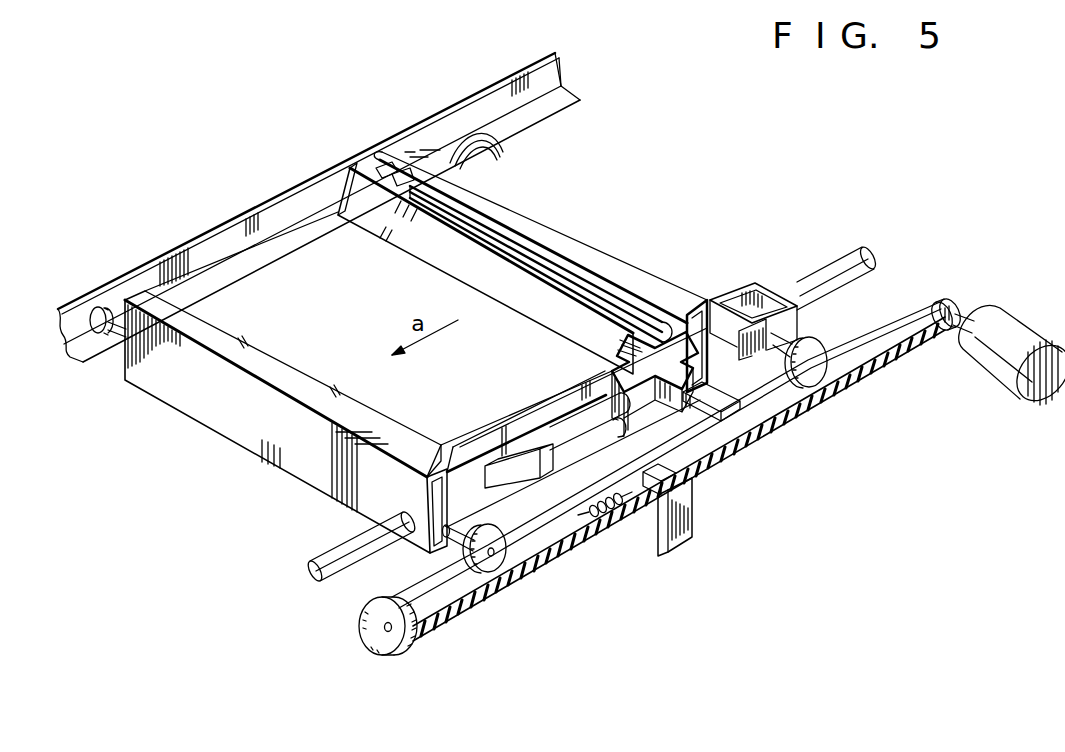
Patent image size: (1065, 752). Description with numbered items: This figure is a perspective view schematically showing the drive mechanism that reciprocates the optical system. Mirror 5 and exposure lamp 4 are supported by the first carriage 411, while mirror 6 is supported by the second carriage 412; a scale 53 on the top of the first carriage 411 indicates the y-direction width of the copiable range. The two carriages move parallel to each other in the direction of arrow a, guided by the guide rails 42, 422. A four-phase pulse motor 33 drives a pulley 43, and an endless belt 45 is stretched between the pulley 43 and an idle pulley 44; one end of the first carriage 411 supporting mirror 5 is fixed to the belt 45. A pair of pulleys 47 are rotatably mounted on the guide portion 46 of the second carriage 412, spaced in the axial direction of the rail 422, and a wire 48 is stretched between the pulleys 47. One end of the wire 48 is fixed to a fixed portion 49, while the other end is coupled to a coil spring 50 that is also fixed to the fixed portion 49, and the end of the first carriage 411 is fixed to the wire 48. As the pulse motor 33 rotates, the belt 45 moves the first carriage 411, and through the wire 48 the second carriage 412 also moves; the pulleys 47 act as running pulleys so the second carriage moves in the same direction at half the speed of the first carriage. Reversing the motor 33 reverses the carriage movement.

The guide rail 42 is at (458, 100).
The second carriage 412 is at (230, 433).
The mirror 6 is at (298, 358).
The mirror 5 is at (400, 243).
The scale 53 is at (510, 207).
The first carriage 411 is at (594, 226).
The exposure lamp 4 is at (563, 277).
The guide rail 422 is at (833, 258).
The guide portion 46 is at (748, 287).
The pulleys 47 is at (820, 340).
The endless belt 45 is at (887, 357).
The wire 48 is at (763, 417).
The idle pulley 44 is at (397, 640).
The pulley 43 is at (953, 302).
The four-phase pulse motor 33 is at (987, 373).
The fixed portion 49 is at (687, 538).
The coil spring 50 is at (610, 517).